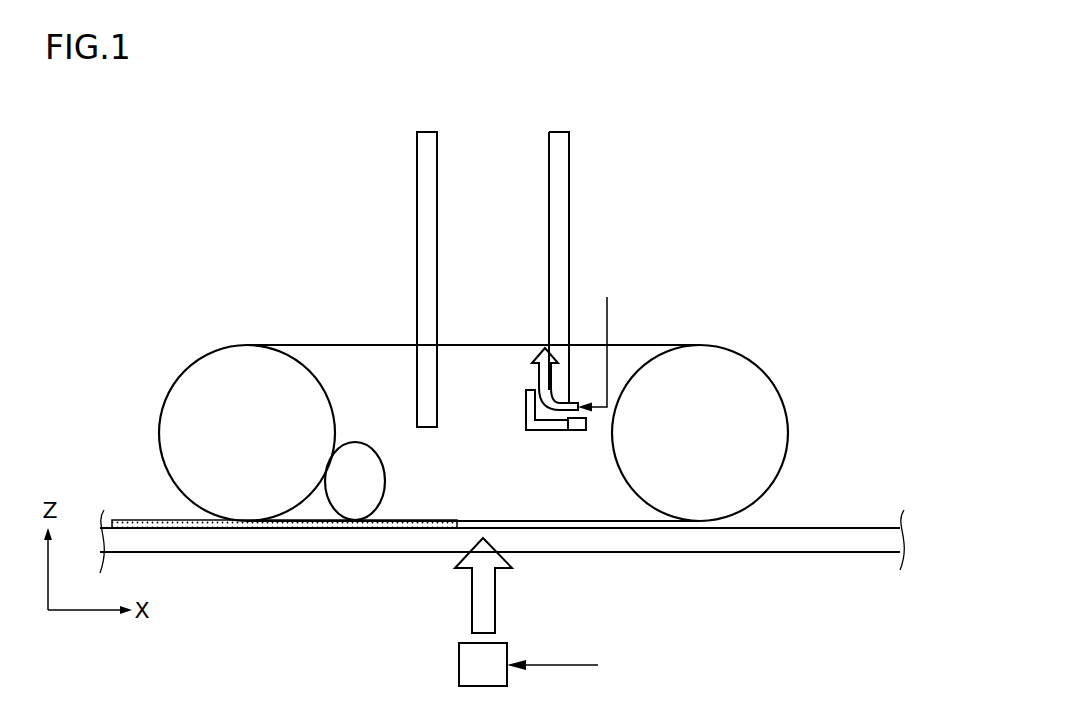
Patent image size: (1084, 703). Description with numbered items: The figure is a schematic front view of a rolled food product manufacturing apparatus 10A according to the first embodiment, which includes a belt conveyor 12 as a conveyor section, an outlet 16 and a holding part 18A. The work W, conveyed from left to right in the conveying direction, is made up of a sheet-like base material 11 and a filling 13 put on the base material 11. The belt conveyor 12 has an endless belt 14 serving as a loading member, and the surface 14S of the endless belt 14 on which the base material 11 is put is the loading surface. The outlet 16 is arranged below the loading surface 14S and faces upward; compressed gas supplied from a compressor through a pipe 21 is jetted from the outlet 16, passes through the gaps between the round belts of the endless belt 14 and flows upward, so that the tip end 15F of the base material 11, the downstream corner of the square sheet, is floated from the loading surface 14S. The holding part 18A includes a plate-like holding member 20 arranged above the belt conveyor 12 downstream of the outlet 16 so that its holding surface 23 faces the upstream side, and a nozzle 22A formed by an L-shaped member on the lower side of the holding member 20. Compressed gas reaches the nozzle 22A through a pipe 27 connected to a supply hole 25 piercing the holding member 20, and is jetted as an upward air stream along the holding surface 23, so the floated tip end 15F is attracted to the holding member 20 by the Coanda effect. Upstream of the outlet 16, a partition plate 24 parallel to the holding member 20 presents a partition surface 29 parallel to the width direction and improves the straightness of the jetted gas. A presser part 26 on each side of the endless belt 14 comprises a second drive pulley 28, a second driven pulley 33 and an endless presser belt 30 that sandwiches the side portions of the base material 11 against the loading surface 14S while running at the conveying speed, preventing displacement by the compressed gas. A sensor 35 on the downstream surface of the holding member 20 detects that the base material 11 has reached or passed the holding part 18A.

The rolled food product manufacturing apparatus 10A is at (784, 173).
The base material 11 is at (143, 520).
The belt conveyor 12 is at (879, 449).
The filling 13 is at (385, 480).
The endless belt 14 is at (811, 520).
The loading surface 14S is at (828, 528).
The tip end 15F is at (428, 520).
The outlet 16 is at (459, 665).
The holding part 18A is at (590, 144).
The holding member 20 is at (569, 232).
The pipe 21 is at (556, 665).
The nozzle 22A is at (527, 372).
The holding surface 23 is at (548, 195).
The partition plate 24 is at (427, 137).
The supply hole 25 is at (567, 400).
The presser part 26 is at (756, 345).
The pipe 27 is at (607, 318).
The second drive pulley 28 is at (180, 383).
The partition surface 29 is at (417, 227).
The presser belt 30 is at (327, 344).
The second driven pulley 33 is at (772, 410).
The sensor 35 is at (577, 430).
The work W is at (164, 495).